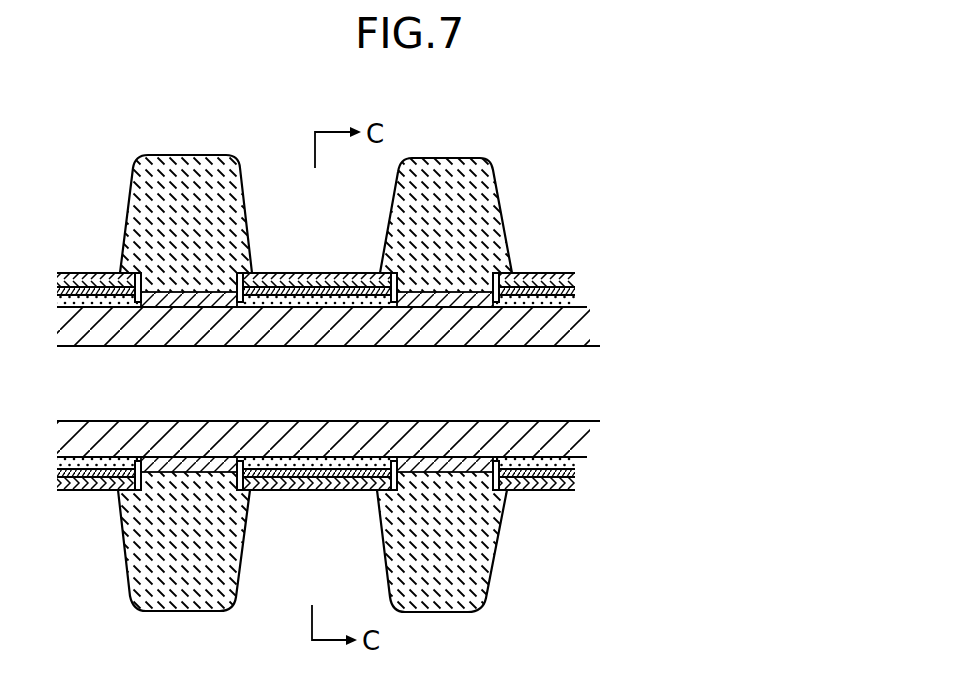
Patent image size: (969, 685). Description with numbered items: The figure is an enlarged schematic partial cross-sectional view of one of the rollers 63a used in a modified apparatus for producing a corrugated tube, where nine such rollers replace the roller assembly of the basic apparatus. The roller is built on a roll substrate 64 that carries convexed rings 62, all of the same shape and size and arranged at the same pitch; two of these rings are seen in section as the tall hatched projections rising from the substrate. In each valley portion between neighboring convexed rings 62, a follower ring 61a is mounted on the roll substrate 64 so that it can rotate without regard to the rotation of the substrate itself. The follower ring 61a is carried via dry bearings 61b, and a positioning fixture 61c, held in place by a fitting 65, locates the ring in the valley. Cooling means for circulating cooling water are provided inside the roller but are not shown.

The follower ring 61a is at (265, 273).
The dry bearings 61b is at (334, 275).
The positioning fixture 61c is at (365, 273).
The convexed ring 62 is at (130, 200).
The roller 63a is at (629, 188).
The roll substrate 64 is at (547, 337).
The fitting 65 is at (480, 300).